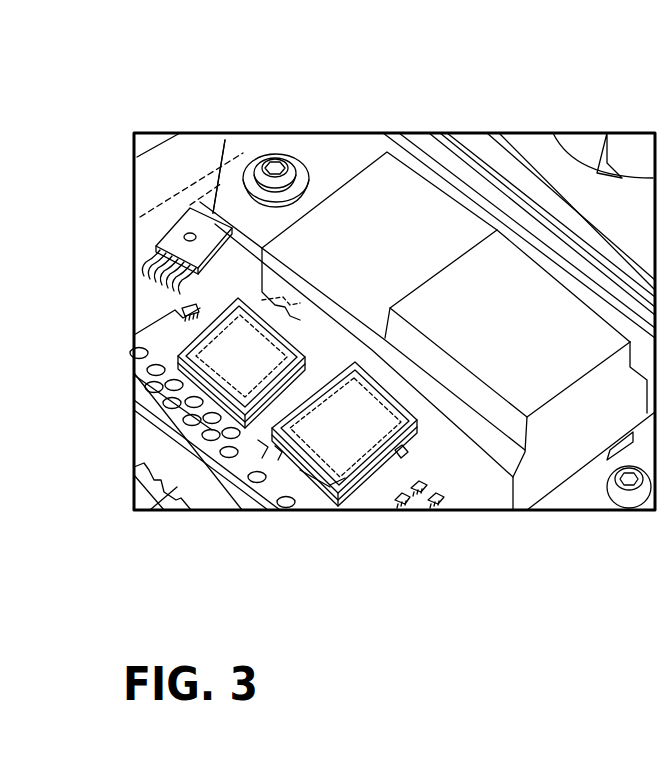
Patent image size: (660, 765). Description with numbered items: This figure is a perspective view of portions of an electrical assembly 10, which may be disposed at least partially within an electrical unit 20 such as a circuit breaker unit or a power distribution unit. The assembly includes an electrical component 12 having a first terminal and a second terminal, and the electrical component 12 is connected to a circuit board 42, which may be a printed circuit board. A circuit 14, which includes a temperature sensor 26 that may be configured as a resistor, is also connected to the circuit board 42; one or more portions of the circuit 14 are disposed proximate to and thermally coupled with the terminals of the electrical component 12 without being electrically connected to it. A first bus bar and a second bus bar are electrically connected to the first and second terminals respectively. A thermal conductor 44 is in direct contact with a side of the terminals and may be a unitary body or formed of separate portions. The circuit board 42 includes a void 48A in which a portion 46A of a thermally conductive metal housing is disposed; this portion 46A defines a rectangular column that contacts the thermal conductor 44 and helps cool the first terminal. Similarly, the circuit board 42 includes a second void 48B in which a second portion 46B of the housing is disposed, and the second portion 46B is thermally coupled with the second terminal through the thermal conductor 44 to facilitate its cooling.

The electrical assembly 10 is at (196, 104).
The electrical component 12 is at (392, 213).
The circuit 14 is at (250, 300).
The electrical unit 20 is at (527, 153).
The temperature sensor 26 is at (273, 315).
The circuit board 42 is at (472, 490).
The thermal conductor 44 is at (150, 510).
The portion of housing 46A is at (244, 404).
The second portion of housing 46B is at (342, 497).
The void 48A is at (276, 447).
The second void 48B is at (417, 460).